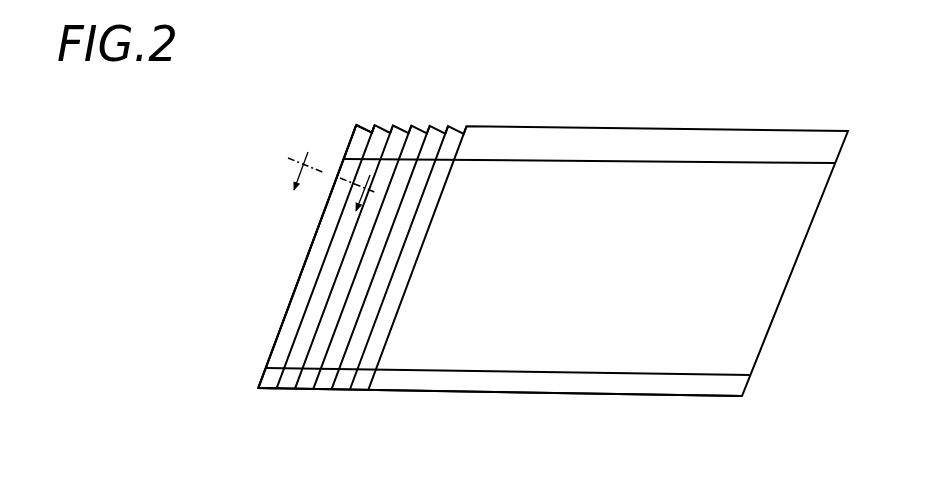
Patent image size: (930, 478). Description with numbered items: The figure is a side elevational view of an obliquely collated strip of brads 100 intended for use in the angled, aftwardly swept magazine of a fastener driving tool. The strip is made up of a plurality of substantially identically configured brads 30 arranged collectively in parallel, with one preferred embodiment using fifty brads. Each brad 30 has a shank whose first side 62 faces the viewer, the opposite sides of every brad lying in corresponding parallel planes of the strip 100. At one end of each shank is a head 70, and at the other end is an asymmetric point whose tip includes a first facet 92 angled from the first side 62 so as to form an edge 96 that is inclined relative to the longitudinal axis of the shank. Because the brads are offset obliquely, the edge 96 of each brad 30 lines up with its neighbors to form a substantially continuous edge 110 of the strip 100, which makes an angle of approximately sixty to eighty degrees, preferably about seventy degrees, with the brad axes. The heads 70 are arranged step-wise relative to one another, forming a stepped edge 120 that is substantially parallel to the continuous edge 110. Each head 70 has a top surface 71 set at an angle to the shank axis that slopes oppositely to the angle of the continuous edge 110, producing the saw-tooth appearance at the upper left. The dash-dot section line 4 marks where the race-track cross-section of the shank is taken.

The obliquely collated strip of brads 100 is at (516, 242).
The stepped edge 120 is at (797, 126).
The head 70 is at (385, 121).
The top surface 71 is at (357, 124).
The brad 30 is at (296, 279).
The first side 62 is at (290, 312).
The first facet 92 is at (272, 377).
The edge 96 is at (268, 389).
The substantially continuous edge 110 is at (334, 394).
The section line 4- 4 is at (325, 199).